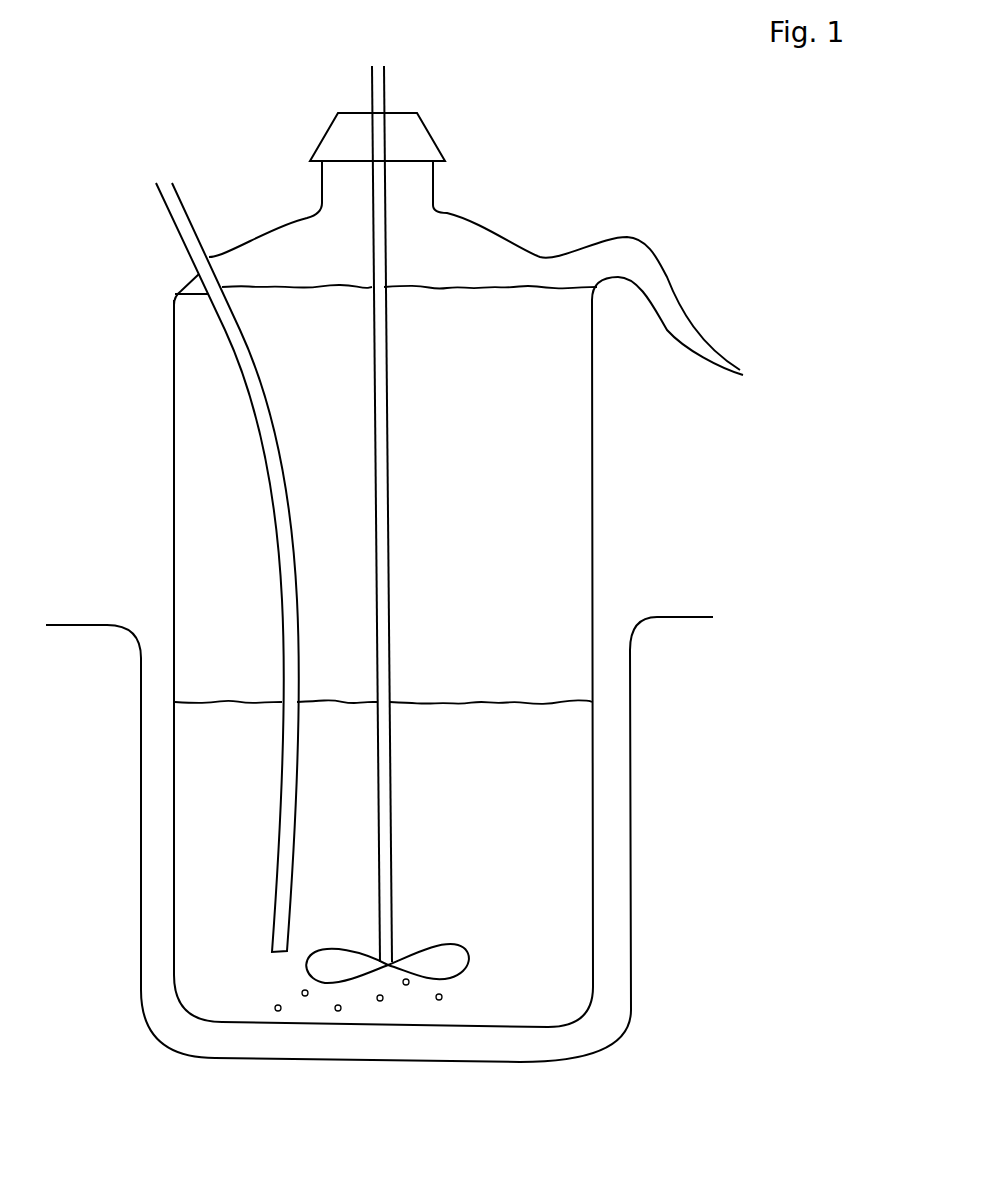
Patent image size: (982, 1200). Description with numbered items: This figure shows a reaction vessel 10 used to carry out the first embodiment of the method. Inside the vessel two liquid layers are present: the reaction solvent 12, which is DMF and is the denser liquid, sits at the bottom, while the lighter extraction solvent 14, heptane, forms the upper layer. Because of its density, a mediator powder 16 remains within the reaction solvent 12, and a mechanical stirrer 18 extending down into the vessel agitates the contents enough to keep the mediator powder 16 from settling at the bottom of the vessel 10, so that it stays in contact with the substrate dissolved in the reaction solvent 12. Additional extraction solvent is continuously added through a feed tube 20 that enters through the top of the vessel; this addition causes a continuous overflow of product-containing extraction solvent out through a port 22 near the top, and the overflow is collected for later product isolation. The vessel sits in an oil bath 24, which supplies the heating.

The reaction vessel 10 is at (172, 480).
The reaction solvent 12 is at (567, 818).
The extraction solvent 14 is at (432, 361).
The mediator powder 16 is at (380, 1005).
The mechanical stirrer 18 is at (385, 83).
The feed tube 20 is at (227, 556).
The port 22 is at (697, 337).
The oil bath 24 is at (153, 1022).